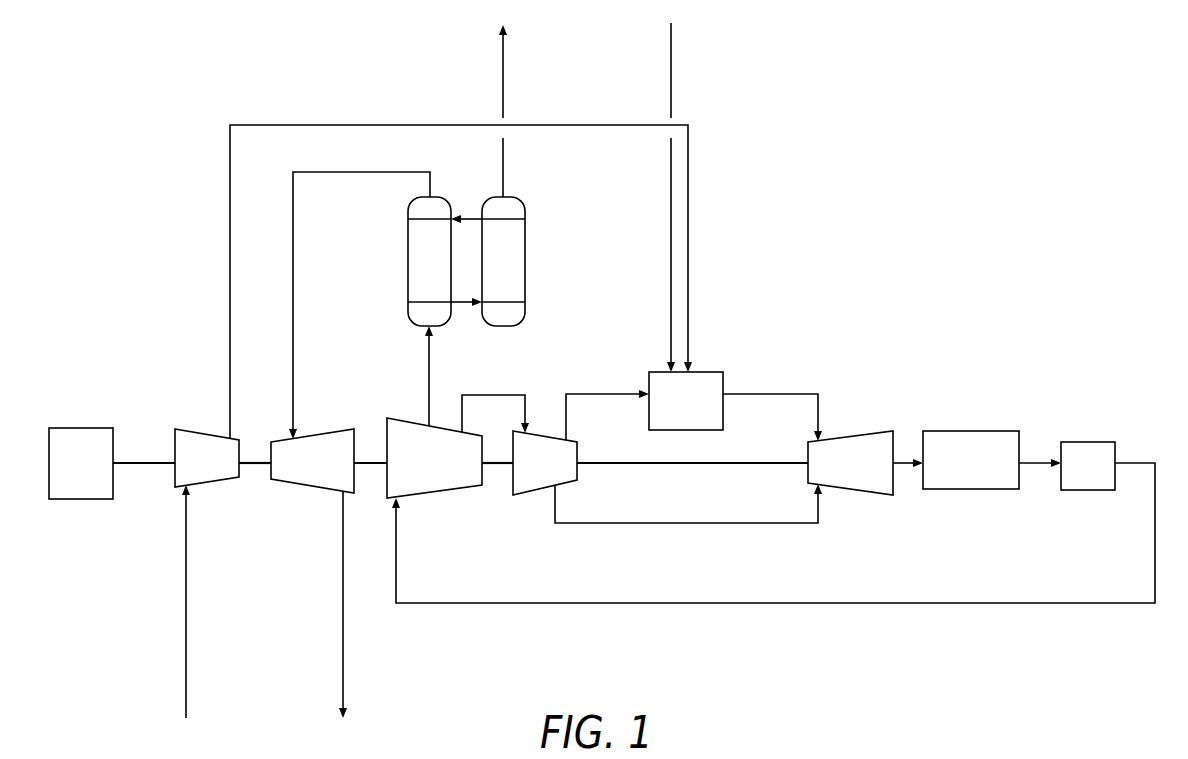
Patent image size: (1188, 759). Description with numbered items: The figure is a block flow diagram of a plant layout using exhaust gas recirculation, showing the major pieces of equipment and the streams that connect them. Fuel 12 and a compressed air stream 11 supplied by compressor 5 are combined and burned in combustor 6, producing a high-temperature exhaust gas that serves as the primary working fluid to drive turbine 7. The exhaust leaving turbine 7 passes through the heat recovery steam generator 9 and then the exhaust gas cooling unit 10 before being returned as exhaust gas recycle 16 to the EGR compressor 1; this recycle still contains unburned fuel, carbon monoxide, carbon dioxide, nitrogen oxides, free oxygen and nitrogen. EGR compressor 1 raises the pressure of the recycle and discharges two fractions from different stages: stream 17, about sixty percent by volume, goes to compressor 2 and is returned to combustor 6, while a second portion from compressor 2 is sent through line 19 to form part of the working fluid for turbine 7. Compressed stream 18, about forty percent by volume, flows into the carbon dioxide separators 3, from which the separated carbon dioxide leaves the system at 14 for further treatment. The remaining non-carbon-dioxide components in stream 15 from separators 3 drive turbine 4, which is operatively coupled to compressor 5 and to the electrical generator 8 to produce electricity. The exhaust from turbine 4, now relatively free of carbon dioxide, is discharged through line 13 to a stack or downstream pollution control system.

The EGR compressor 1 is at (424, 475).
The compressor 2 is at (535, 475).
The carbon dioxide separators 3 is at (419, 280).
The turbine 4 is at (302, 475).
The compressor 5 is at (197, 475).
The combustor 6 is at (676, 410).
The turbine 7 is at (840, 475).
The electrical generator 8 is at (71, 475).
The heat recovery steam generator (HRSG) 9 is at (961, 473).
The exhaust gas cooling unit 10 is at (1076, 476).
The compressed air stream 11 is at (230, 238).
The fuel 12 is at (671, 85).
The line 13 is at (343, 685).
The separated CO2 14 is at (503, 87).
The stream 15 is at (293, 273).
The exhaust gas recycle 16 is at (708, 603).
The stream 17 is at (485, 393).
The compressed stream 18 is at (429, 385).
The line 19 is at (668, 523).